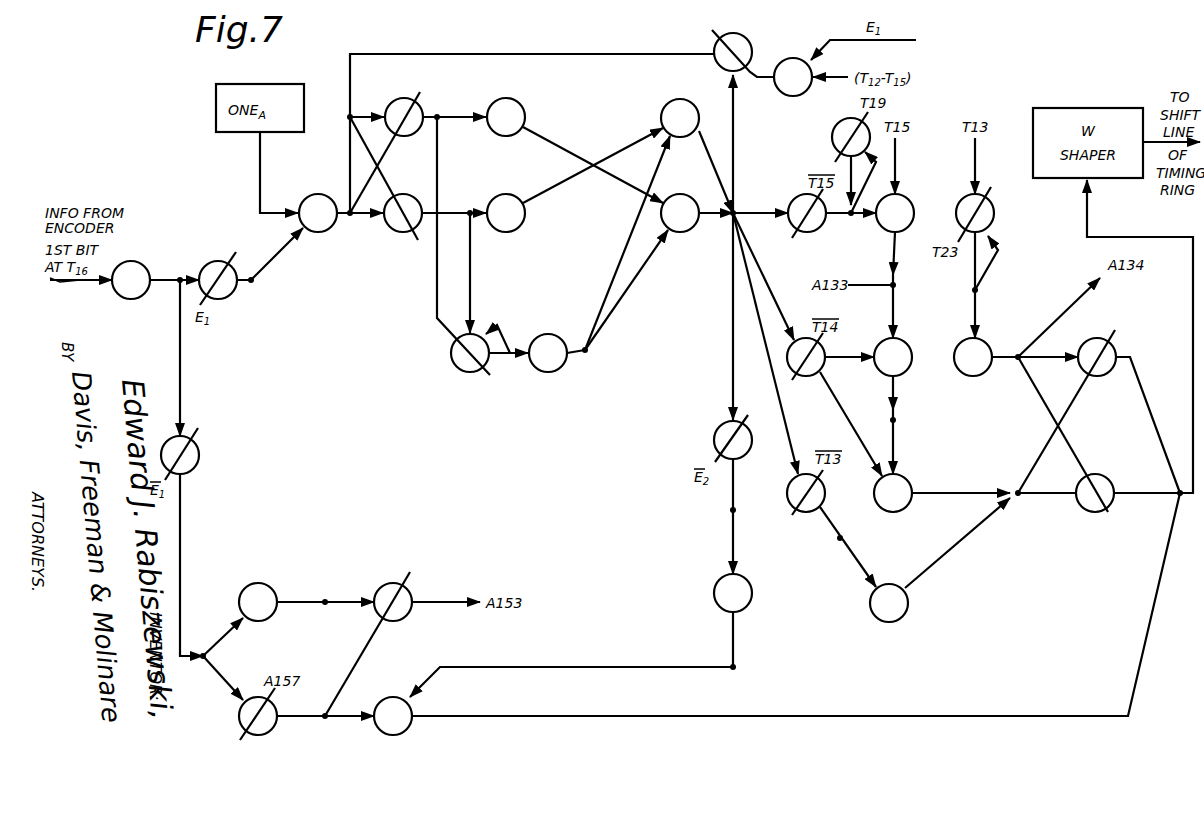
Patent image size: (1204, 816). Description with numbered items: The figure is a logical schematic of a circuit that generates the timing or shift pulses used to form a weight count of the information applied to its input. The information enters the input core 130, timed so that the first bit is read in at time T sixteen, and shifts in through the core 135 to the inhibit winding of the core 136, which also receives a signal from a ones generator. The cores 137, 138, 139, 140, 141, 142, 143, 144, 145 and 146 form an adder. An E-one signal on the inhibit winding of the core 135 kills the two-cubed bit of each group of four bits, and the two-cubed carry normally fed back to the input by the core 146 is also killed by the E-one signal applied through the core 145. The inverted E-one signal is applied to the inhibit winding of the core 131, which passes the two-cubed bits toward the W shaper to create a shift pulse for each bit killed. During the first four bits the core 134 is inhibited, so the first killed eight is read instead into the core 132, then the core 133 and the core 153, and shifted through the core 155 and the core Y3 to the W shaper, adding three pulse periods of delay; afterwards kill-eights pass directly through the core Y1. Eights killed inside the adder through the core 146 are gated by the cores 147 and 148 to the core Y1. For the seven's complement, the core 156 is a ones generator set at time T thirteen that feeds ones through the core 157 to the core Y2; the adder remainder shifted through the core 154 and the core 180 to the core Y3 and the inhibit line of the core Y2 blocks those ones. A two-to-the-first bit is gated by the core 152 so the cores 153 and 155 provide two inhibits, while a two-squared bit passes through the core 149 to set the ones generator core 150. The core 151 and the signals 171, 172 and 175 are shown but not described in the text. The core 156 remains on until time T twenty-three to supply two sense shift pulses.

The input core 130 is at (131, 280).
The core 131 is at (180, 455).
The core 132 is at (258, 602).
The core 133 is at (393, 602).
The core 134 is at (258, 716).
The core 135 is at (218, 280).
The core 136 is at (318, 213).
The core 137 is at (404, 117).
The core 138 is at (506, 117).
The core 139 is at (403, 213).
The core 140 is at (506, 213).
The core 141 is at (470, 353).
The core 142 is at (548, 353).
The core 143 is at (680, 118).
The core 144 is at (680, 213).
The core 145 is at (793, 77).
The core 146 is at (733, 52).
The core 147 is at (733, 440).
The core 148 is at (733, 593).
The core 149 is at (807, 213).
The core 150 is at (851, 137).
The core 151 is at (895, 213).
The core 152 is at (806, 357).
The core 153 is at (893, 357).
The core 154 is at (806, 493).
The core 155 is at (893, 493).
The core 156 is at (975, 213).
The core 157 is at (973, 357).
The core 180 is at (889, 603).
The signal A171 171 is at (205, 413).
The signal A172 172 is at (761, 397).
The signal A175 175 is at (588, 141).
The core Y1 is at (393, 716).
The core Y2 is at (1097, 357).
The core Y3 is at (1095, 493).